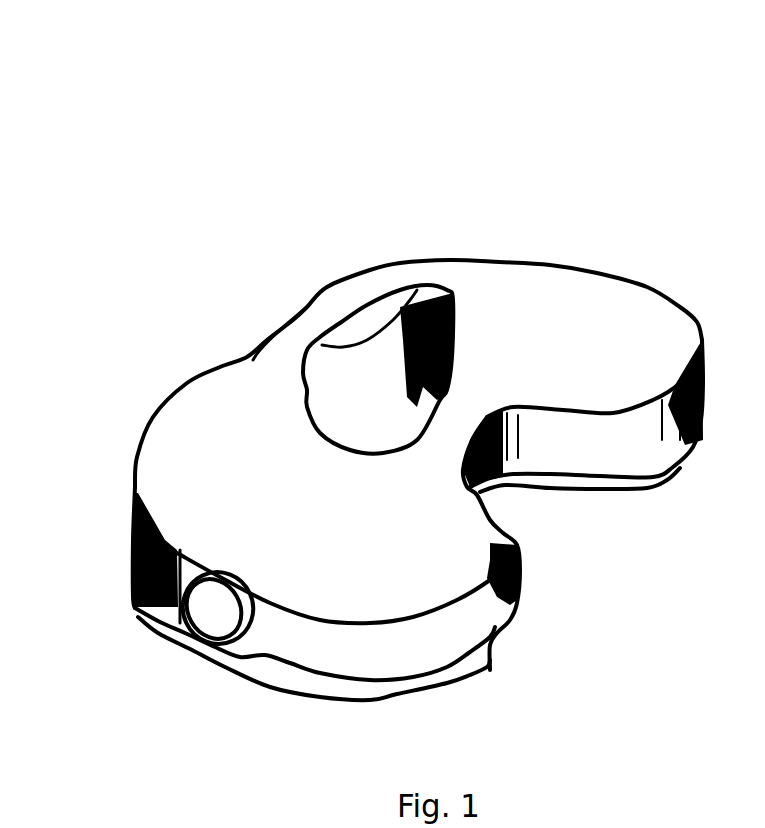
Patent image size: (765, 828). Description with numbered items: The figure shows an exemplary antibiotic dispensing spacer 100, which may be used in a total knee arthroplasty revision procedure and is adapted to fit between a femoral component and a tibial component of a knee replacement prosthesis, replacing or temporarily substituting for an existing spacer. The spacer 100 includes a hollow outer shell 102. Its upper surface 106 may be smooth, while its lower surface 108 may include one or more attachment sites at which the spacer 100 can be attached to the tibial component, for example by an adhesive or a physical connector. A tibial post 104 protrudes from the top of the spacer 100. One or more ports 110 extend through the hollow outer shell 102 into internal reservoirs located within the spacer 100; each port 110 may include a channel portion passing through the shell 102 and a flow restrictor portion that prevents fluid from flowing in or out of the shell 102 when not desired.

The antibiotic dispensing spacer 100 is at (363, 363).
The hollow outer shell 102 is at (262, 319).
The tibial post 104 is at (397, 290).
The upper surface 106 is at (182, 447).
The lower surface 108 is at (468, 665).
The port 110 is at (165, 623).